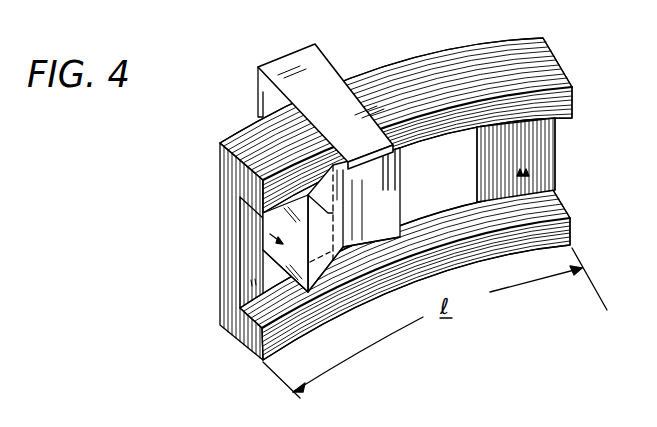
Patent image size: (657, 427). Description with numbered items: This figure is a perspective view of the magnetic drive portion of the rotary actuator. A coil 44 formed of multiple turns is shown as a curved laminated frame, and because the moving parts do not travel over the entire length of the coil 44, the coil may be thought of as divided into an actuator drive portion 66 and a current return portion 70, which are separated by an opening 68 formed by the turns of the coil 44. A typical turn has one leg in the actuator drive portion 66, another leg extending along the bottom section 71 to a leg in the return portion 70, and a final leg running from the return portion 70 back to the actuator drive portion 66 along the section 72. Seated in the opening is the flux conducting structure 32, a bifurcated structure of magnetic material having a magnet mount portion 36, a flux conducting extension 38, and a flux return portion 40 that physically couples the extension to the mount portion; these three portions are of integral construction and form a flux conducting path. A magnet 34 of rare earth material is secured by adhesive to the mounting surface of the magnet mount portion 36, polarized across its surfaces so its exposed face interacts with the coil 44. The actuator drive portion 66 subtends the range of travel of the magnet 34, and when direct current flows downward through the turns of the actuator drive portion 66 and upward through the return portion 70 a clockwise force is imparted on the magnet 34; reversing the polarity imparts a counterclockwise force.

The flux conducting structure 32 is at (338, 64).
The magnet 34 is at (293, 266).
The magnet mount portion 36 is at (310, 288).
The flux conducting extension 38 is at (258, 93).
The flux return portion 40 is at (297, 67).
The coil 44 is at (220, 228).
The actuator drive portion 66 is at (247, 290).
The opening 68 is at (443, 192).
The current return portion 70 is at (538, 176).
The bottom section 71 is at (360, 300).
The section 72 is at (443, 75).